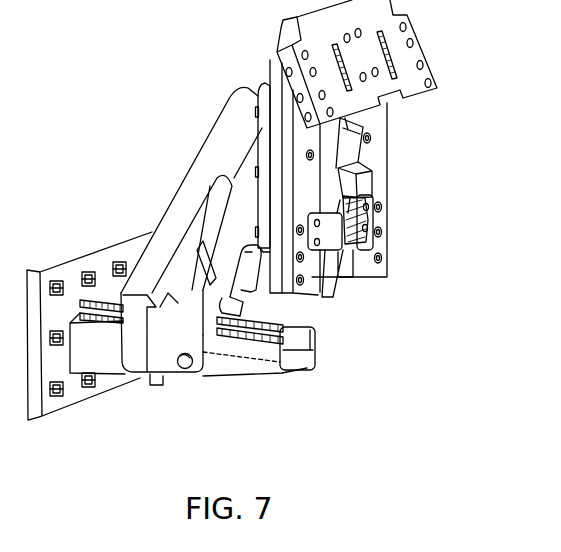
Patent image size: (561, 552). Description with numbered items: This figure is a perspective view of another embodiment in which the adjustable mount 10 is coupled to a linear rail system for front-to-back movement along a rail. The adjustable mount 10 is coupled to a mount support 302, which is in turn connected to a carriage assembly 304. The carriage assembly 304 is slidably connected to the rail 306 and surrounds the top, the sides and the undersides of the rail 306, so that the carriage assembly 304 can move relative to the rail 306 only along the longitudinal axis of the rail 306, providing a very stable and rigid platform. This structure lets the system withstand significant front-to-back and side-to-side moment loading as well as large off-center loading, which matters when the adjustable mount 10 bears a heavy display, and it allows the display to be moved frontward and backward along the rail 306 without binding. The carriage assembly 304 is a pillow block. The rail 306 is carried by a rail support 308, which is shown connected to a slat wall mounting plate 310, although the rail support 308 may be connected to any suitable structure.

The adjustable mount 10 is at (448, 38).
The mount support 302 is at (207, 147).
The carriage assembly 304 is at (150, 381).
The rail 306 is at (283, 314).
The rail support 308 is at (253, 374).
The slat wall mounting plate 310 is at (97, 248).